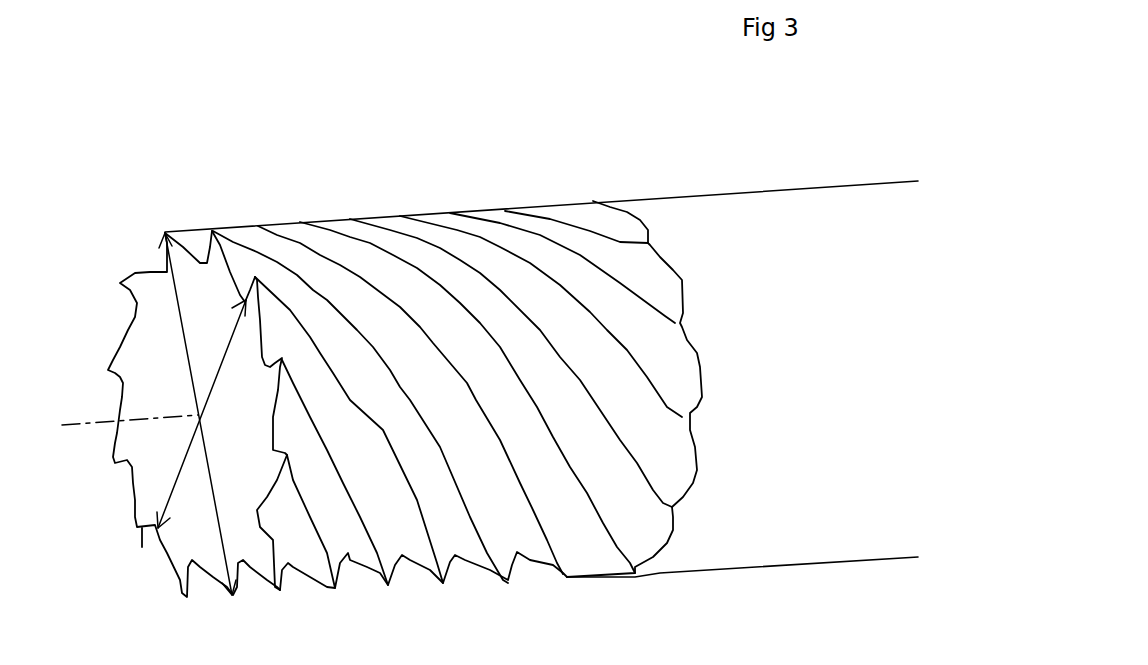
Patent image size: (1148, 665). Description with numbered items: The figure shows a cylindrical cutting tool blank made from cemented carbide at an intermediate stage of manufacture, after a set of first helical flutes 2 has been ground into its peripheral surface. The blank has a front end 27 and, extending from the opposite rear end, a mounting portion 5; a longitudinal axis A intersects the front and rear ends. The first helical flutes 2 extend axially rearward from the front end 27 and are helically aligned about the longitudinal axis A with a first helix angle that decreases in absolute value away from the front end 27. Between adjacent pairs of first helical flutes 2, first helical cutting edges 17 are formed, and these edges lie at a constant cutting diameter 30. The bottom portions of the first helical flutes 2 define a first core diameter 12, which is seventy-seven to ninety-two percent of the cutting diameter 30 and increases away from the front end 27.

The first helical flutes 2 is at (500, 276).
The mounting portion 5 is at (541, 379).
The first core diameter 12 is at (201, 414).
The first helical cutting edges 17 is at (290, 310).
The front end 27 is at (143, 347).
The cutting diameter 30 is at (197, 414).
The longitudinal axis A is at (119, 416).